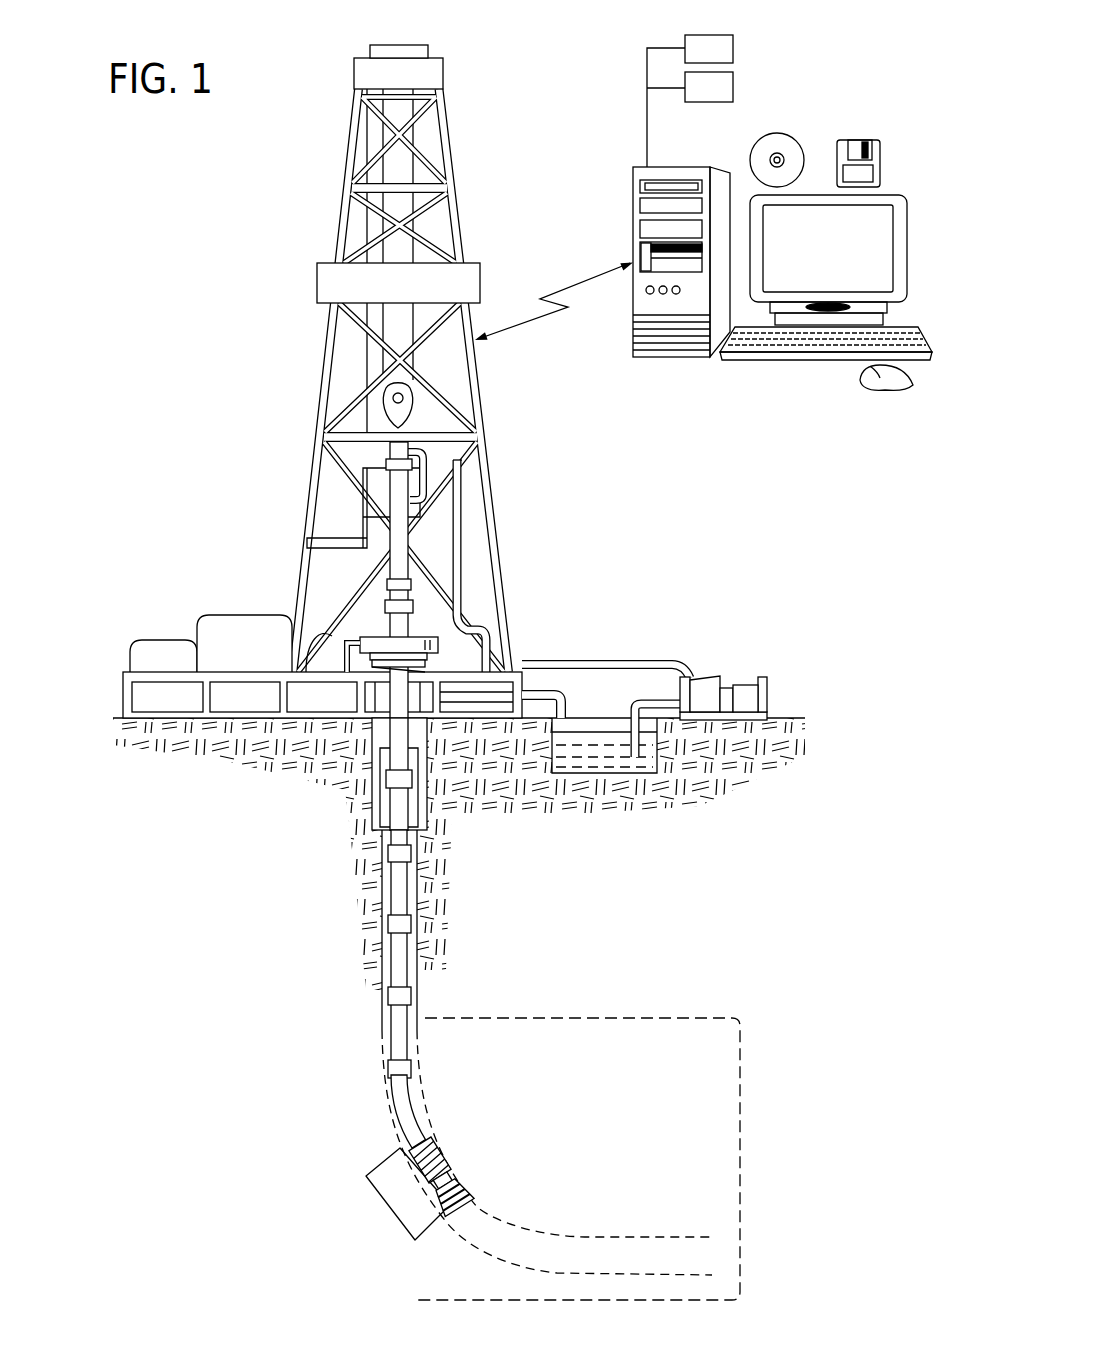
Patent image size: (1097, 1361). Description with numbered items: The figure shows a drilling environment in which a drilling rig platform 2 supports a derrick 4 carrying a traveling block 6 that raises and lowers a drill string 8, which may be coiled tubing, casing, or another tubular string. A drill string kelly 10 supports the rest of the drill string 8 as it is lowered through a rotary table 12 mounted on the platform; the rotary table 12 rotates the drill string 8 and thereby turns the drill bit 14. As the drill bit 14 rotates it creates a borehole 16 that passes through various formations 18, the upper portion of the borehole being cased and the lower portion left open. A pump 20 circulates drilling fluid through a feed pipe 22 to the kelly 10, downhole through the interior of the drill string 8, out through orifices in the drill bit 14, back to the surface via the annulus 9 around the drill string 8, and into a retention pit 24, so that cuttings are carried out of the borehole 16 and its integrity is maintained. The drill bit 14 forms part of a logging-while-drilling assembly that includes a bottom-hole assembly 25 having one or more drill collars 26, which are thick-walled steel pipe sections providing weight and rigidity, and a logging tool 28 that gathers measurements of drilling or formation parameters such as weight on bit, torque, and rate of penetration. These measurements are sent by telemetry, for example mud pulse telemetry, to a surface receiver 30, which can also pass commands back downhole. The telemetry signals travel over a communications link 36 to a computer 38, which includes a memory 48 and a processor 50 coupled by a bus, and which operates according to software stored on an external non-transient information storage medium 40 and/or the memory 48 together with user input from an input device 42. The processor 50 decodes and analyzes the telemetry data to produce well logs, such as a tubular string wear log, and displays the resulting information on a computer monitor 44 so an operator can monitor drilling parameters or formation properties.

The drilling rig platform 2 is at (122, 692).
The derrick 4 is at (458, 148).
The traveling block 6 is at (405, 400).
The drill string 8 is at (418, 875).
The annulus 9 is at (383, 893).
The drill string kelly 10 is at (403, 488).
The rotary table 12 is at (416, 637).
The drill bit 14 is at (470, 1192).
The borehole 16 is at (420, 913).
The formations 18 is at (742, 1163).
The pump 20 is at (698, 695).
The feed pipe 22 is at (612, 660).
The retention pit 24 is at (568, 778).
The bottom-hole assembly 25 is at (380, 1210).
The drill collars 26 is at (440, 1170).
The logging tool 28 is at (433, 1145).
The surface receiver 30 is at (413, 583).
The communications link 36 is at (583, 283).
The computer 38 is at (663, 358).
The external non-transient information storage medium 40 is at (858, 138).
The input device 42 is at (820, 360).
The computer monitor 44 is at (890, 195).
The memory 48 is at (735, 90).
The processor 50 is at (735, 47).